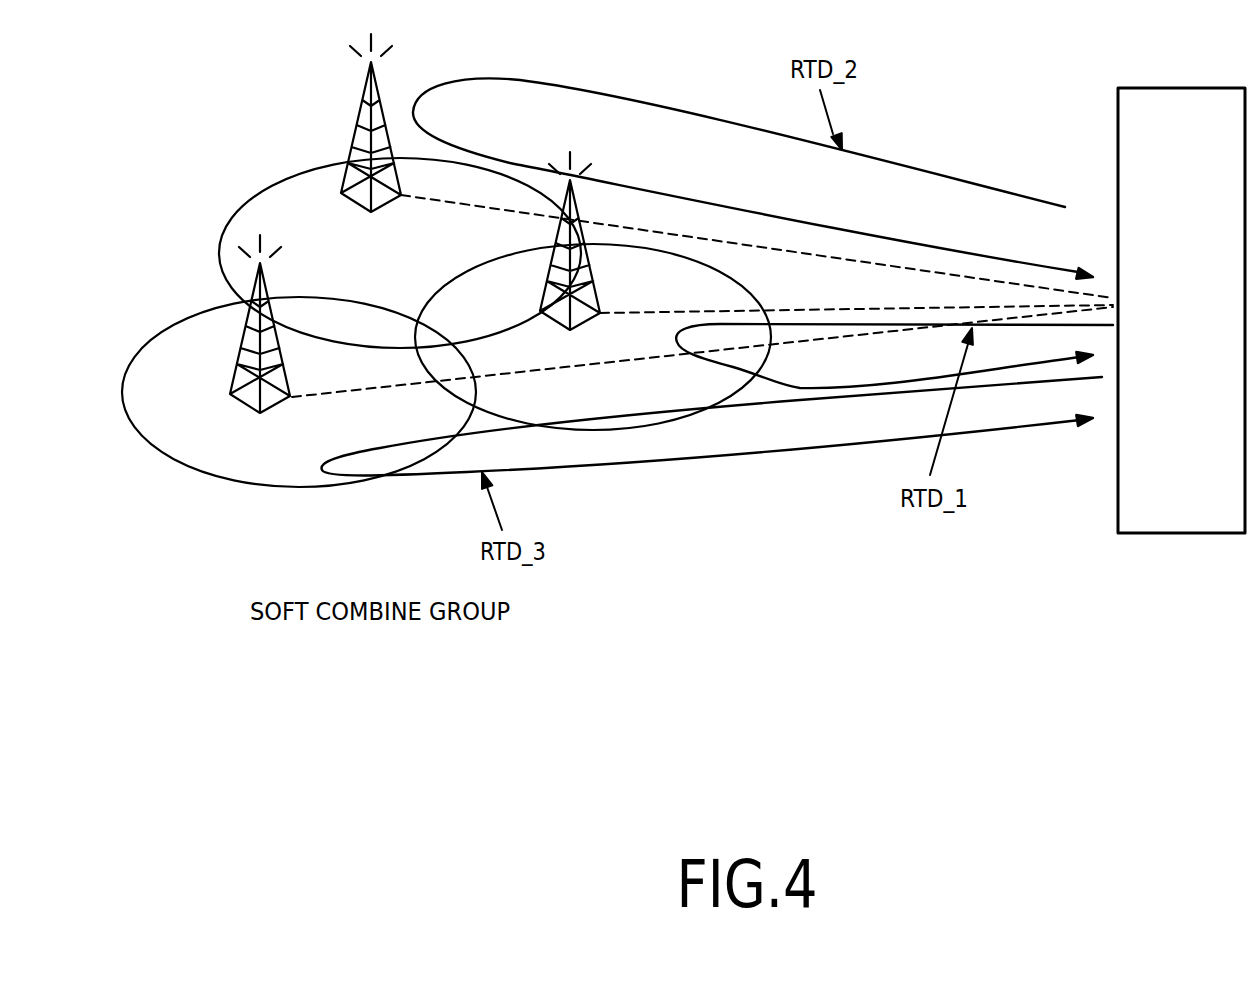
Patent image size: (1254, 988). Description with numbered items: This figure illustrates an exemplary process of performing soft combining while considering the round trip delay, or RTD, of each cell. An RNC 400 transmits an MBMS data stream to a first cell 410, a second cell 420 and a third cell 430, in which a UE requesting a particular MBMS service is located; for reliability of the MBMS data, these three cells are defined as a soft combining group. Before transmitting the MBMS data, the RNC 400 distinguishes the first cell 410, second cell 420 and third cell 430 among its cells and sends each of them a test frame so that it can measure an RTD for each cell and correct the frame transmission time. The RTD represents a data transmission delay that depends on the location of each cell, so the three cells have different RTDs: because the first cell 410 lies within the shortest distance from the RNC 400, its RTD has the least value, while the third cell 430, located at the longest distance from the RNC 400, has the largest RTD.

The RNC 400 is at (1182, 533).
The cell#1 410 is at (667, 421).
The cell#2 420 is at (262, 186).
The cell#3 430 is at (152, 338).